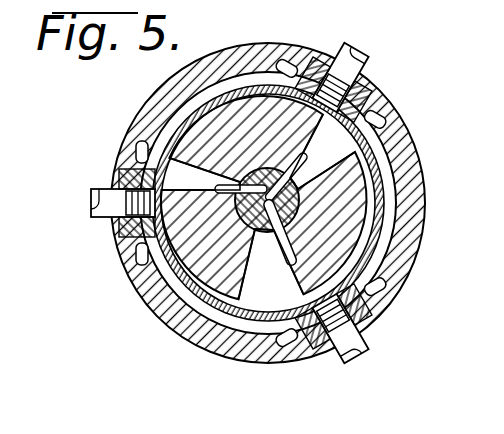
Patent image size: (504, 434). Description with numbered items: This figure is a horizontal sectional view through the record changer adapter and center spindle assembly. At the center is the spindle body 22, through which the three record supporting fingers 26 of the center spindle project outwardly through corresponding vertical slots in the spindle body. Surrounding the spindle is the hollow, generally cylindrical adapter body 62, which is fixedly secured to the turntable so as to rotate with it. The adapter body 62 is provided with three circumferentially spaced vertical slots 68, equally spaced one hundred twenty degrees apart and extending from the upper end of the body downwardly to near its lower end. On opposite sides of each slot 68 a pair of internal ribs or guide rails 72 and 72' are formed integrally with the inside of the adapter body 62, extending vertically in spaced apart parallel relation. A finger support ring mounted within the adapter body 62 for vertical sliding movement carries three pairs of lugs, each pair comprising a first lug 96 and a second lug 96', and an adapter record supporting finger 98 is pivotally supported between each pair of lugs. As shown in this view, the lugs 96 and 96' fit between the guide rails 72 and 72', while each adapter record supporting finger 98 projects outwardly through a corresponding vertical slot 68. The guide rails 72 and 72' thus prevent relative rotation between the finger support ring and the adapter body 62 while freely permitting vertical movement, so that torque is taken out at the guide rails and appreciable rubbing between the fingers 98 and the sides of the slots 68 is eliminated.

The spindle body 22 is at (299, 204).
The record supporting fingers 26 is at (210, 189).
The adapter body 62 is at (166, 327).
The vertical slots 68 is at (92, 211).
The internal rib 72 is at (259, 157).
The internal rib 72' is at (271, 243).
The first lug 96 is at (243, 231).
The second lug 96' is at (236, 178).
The adapter record supporting finger 98 is at (93, 191).